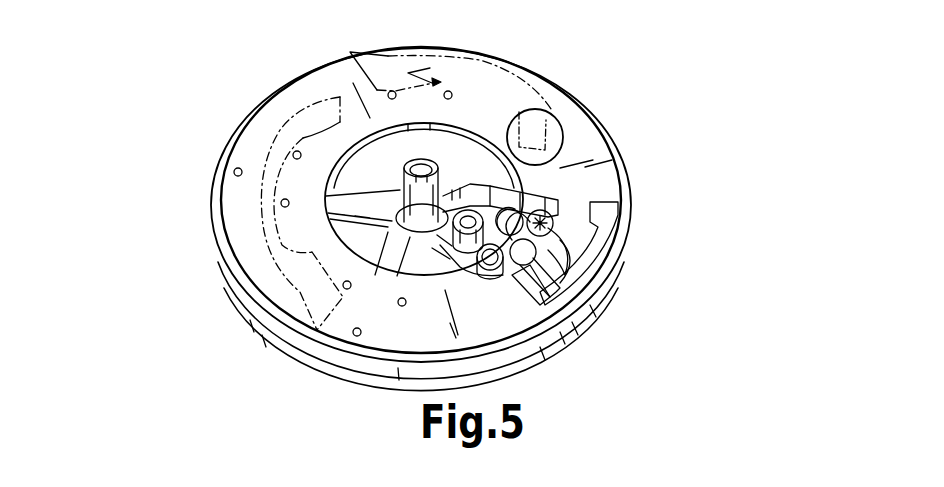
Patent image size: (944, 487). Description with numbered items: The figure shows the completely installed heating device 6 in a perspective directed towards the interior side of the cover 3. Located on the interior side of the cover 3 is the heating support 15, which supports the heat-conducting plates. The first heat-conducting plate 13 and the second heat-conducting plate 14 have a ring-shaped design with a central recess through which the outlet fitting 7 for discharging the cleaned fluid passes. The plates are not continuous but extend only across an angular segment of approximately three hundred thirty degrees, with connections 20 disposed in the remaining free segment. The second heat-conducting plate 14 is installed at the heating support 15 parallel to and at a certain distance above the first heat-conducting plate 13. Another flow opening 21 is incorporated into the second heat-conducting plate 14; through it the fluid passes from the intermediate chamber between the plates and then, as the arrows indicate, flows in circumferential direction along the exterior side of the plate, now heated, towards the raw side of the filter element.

The heating device 6 is at (221, 93).
The cover 3 is at (583, 317).
The outlet fitting 7 is at (413, 198).
The heat-conducting plate 13 is at (462, 140).
The heat-conducting plate 14 is at (582, 132).
The heating support 15 is at (608, 212).
The connections 20 is at (505, 285).
The flow opening 21 is at (553, 130).